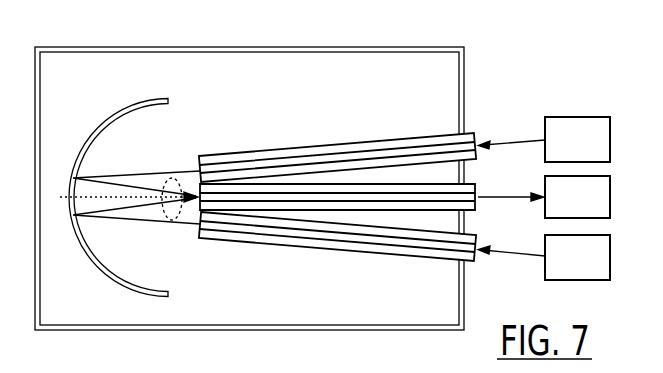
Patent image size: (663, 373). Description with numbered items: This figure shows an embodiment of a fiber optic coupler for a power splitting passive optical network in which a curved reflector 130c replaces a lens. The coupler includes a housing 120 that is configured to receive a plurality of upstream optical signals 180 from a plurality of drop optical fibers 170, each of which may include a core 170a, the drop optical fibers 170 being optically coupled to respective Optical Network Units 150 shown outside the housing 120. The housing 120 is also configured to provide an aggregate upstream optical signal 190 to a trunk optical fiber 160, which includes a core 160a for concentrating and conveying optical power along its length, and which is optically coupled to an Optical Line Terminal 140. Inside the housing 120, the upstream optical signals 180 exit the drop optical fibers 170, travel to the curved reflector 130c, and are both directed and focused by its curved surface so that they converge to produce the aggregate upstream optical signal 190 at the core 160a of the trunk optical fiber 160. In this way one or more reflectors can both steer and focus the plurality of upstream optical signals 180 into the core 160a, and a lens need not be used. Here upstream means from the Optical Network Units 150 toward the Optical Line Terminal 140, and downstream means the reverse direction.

The housing 120 is at (297, 47).
The curved reflector 130c is at (119, 110).
The upstream optical signals 180 is at (101, 176).
The aggregate upstream optical signal 190 is at (172, 220).
The drop optical fibers 170 is at (257, 149).
The core 170a is at (310, 153).
The trunk optical fiber 160 is at (476, 185).
The core 160a is at (477, 205).
The Optical Network Units (ONUs) 150 is at (610, 140).
The Optical Line Terminal (OLT) 140 is at (610, 197).